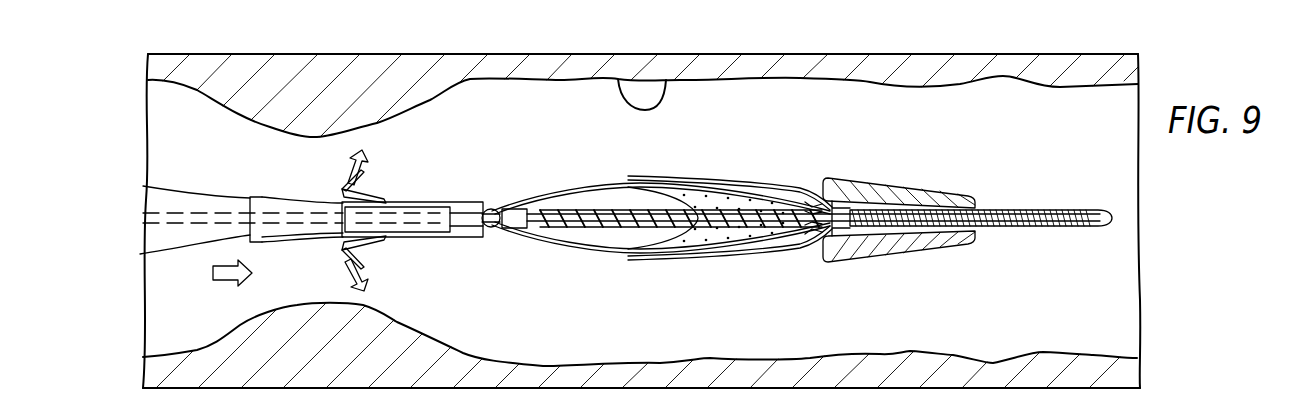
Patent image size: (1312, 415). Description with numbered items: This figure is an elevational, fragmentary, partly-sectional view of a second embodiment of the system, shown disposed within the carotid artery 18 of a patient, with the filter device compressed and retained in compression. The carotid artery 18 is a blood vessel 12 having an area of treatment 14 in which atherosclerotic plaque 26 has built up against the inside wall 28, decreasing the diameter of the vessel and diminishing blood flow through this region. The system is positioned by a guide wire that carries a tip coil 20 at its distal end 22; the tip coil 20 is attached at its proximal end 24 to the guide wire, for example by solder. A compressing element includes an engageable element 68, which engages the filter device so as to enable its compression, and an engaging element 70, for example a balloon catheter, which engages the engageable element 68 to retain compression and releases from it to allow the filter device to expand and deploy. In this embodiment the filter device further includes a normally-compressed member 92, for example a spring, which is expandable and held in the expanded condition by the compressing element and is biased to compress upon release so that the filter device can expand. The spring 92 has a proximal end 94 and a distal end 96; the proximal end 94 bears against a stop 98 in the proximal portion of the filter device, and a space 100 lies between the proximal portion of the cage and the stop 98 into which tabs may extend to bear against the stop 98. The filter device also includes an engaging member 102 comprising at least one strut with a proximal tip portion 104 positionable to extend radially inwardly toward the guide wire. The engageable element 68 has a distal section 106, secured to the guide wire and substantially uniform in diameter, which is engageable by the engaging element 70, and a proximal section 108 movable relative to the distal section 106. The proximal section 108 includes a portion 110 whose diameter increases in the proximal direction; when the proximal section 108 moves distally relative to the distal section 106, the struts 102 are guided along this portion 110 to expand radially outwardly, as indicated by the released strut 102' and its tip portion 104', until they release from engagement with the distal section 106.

The blood vessel 12 is at (538, 62).
The area of treatment 14 is at (319, 78).
The carotid artery 18 is at (908, 67).
The tip coil 20 is at (1000, 210).
The distal end 22 is at (1066, 228).
The proximal end 24 is at (873, 216).
The atherosclerotic plaque 26 is at (273, 78).
The inside wall 28 is at (666, 80).
The engageable element 68 is at (246, 187).
The engaging element 70 is at (402, 239).
The normally-compressed member 92 is at (602, 230).
The proximal end 94 is at (549, 230).
The distal end 96 is at (776, 226).
The stop 98 is at (510, 212).
The space 100 is at (487, 212).
The engaging member 102 is at (195, 201).
The engaging member 102' is at (393, 220).
The proximal tip portion 104 is at (331, 215).
The proximal tip portion 104' is at (316, 217).
The distal section 106 is at (437, 205).
The proximal section 108 is at (255, 242).
The portion 110 is at (296, 240).